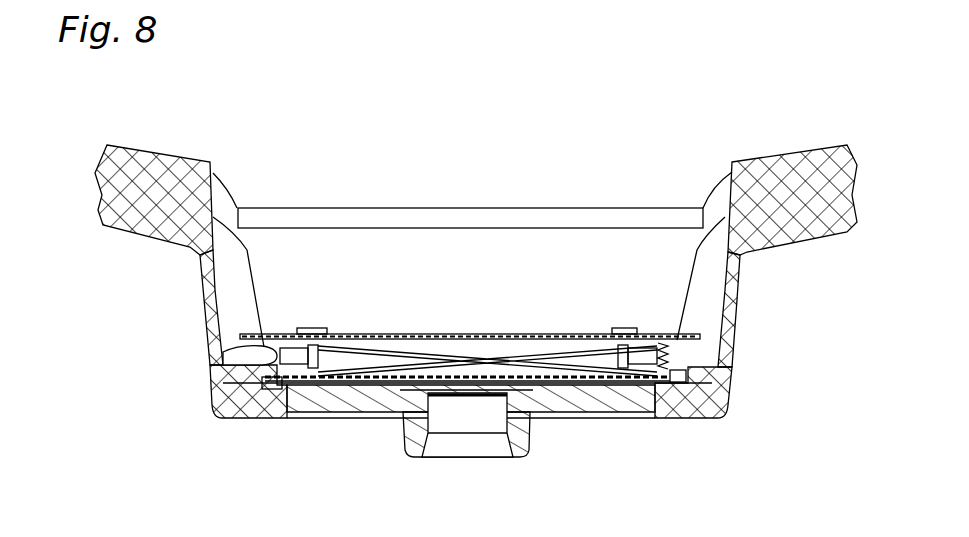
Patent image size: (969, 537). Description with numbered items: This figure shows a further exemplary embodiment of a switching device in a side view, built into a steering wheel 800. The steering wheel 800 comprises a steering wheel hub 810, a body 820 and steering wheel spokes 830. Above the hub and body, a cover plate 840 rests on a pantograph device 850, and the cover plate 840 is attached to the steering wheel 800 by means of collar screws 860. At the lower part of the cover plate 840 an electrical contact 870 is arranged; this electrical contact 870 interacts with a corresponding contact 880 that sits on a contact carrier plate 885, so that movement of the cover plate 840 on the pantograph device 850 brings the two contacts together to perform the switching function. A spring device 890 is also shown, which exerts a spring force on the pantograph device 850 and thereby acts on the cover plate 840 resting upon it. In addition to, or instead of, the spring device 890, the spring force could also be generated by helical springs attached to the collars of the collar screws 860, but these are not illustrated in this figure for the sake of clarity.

The steering wheel 800 is at (712, 378).
The steering wheel hub 810 is at (417, 455).
The body 820 is at (203, 313).
The steering wheel spokes 830 is at (152, 160).
The cover plate 840 is at (435, 333).
The pantograph device 850 is at (527, 335).
The collar screws 860 is at (310, 327).
The electrical contact 870 is at (225, 350).
The corresponding contact 880 is at (238, 366).
The contact carrier plate 885 is at (266, 374).
The spring device 890 is at (668, 358).